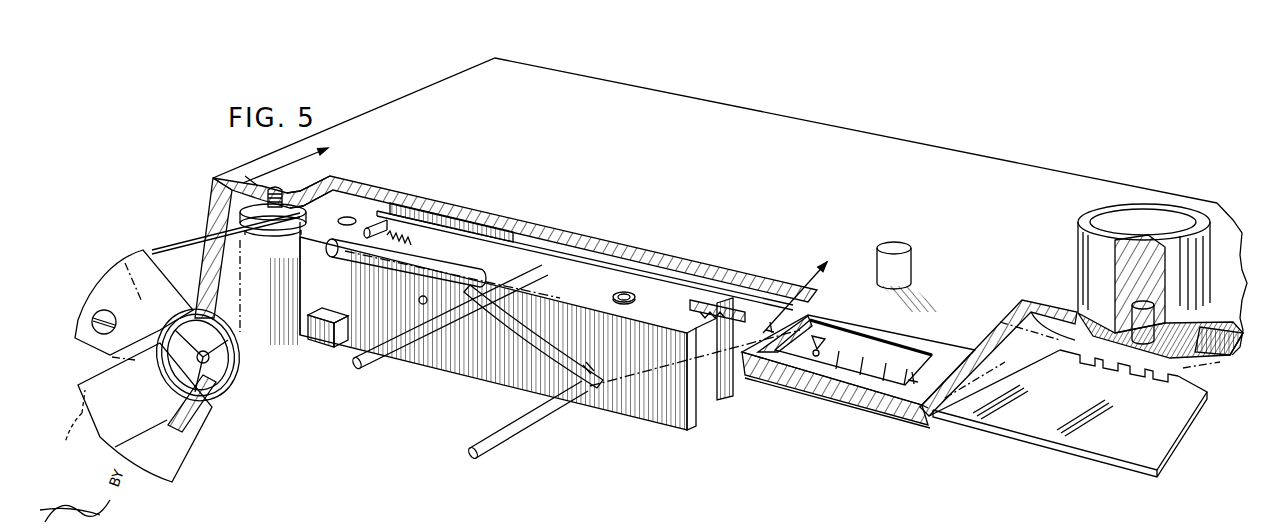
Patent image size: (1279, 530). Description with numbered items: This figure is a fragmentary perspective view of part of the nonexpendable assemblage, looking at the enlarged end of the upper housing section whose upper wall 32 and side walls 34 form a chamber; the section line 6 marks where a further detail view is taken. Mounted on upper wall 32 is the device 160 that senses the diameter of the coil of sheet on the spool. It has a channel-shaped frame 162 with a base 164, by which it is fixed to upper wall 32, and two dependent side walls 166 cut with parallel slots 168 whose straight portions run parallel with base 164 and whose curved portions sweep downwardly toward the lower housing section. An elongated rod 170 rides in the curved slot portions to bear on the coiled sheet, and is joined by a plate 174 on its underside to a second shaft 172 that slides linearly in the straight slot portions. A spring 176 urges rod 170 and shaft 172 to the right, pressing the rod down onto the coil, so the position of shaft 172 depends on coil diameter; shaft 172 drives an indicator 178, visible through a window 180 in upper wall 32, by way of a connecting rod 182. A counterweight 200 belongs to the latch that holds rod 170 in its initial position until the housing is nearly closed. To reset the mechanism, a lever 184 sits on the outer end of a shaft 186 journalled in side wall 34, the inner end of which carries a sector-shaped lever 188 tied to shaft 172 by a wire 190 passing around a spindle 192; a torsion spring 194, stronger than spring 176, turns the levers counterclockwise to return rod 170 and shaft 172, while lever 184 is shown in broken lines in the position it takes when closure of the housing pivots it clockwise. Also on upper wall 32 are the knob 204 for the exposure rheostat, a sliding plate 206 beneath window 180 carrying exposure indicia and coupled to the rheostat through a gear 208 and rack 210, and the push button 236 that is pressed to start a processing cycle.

The section line 6- 6 is at (543, 262).
The upper wall 32 is at (578, 219).
The side walls 34 is at (264, 354).
The device 160 is at (460, 392).
The channel-shaped frame 162 is at (667, 286).
The base 164 is at (588, 272).
The side walls 166 is at (706, 398).
The parallel slots 168 is at (548, 342).
The elongated rod 170 is at (372, 363).
The second shaft 172 is at (318, 252).
The plate 174 is at (362, 254).
The spring 176 is at (396, 260).
The indicator 178 is at (822, 340).
The window 180 is at (873, 349).
The connecting rod 182 is at (462, 205).
The lever 184 is at (82, 413).
The shaft 186 is at (223, 393).
The lever 188 is at (115, 296).
The wire 190 is at (203, 230).
The spindle 192 is at (296, 185).
The torsion spring 194 is at (216, 332).
The counterweight 200 is at (317, 349).
The knob 204 is at (1222, 200).
The plate 206 is at (1085, 437).
The gear 208 is at (1071, 300).
The rack 210 is at (1139, 382).
The push button 236 is at (893, 243).